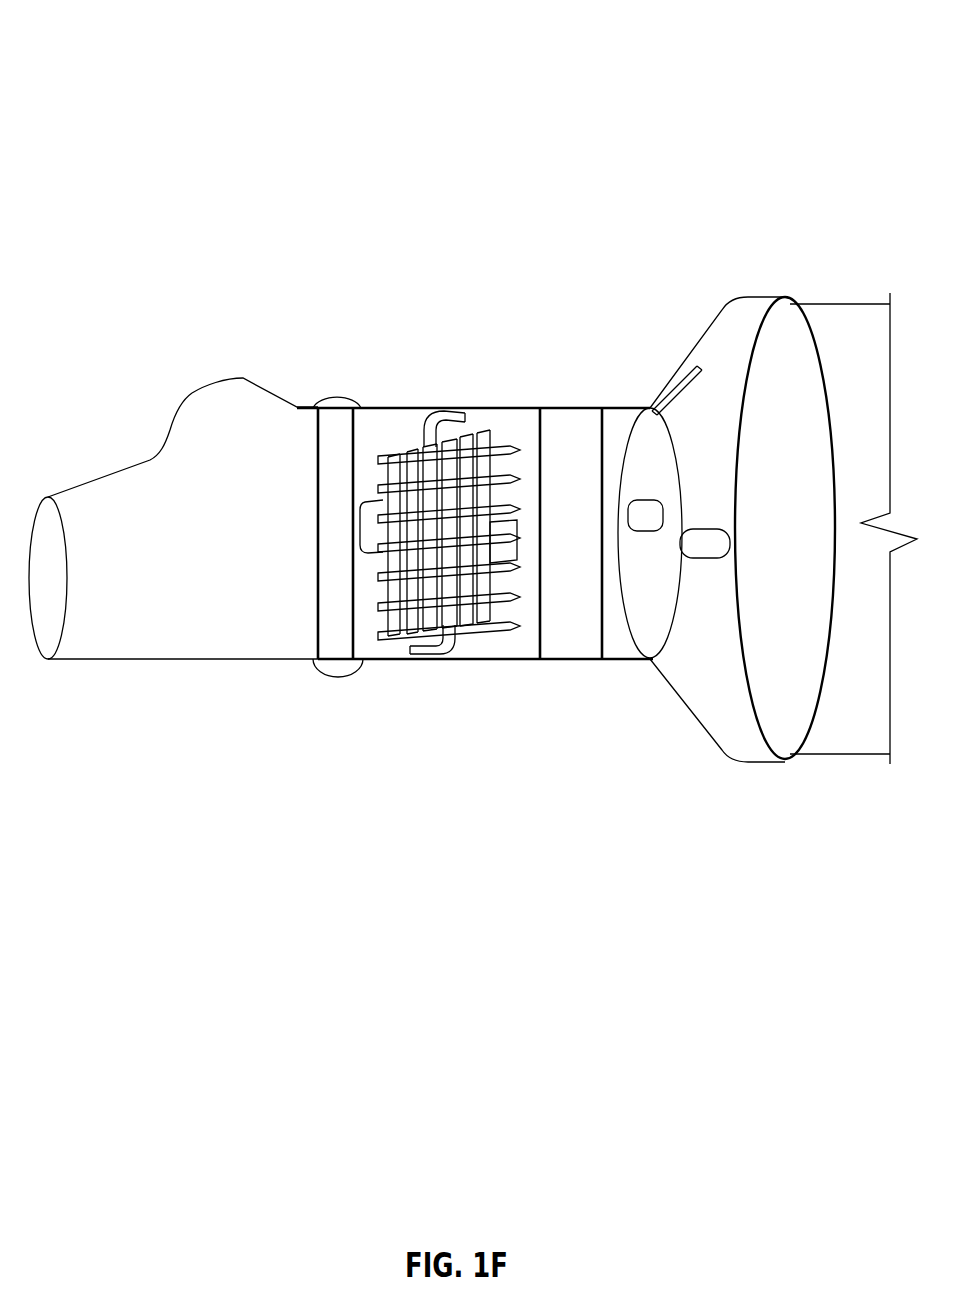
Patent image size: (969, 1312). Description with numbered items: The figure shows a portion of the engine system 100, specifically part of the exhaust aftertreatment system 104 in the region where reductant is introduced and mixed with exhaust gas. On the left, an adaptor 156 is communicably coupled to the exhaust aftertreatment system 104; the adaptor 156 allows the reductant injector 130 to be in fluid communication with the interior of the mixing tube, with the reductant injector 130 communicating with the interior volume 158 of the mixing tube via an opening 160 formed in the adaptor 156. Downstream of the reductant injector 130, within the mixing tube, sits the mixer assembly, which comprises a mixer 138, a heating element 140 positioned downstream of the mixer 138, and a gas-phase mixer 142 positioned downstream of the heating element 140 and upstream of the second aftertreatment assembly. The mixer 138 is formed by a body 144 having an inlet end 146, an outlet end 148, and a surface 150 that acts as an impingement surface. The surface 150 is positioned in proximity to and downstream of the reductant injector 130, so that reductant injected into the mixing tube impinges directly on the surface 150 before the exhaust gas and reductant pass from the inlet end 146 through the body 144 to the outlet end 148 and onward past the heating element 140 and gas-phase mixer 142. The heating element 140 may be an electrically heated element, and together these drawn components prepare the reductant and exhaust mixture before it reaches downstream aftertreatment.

The engine system 100 is at (707, 72).
The exhaust aftertreatment system 104 is at (518, 346).
The reductant injector 130 is at (195, 325).
The mixer 138 is at (452, 407).
The heating element 140 is at (316, 585).
The gas-phase mixer 142 is at (578, 407).
The body 144 is at (428, 655).
The inlet end 146 is at (381, 428).
The outlet end 148 is at (513, 648).
The surface 150 is at (378, 578).
The adaptor 156 is at (102, 662).
The interior volume 158 is at (212, 422).
The opening 160 is at (205, 387).